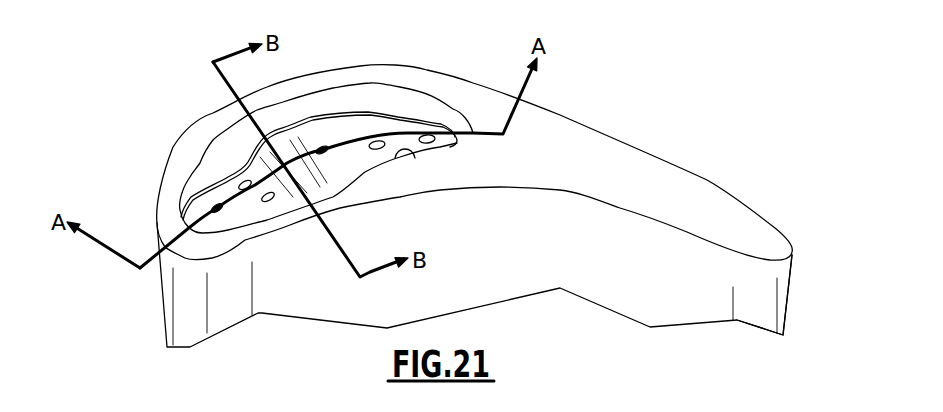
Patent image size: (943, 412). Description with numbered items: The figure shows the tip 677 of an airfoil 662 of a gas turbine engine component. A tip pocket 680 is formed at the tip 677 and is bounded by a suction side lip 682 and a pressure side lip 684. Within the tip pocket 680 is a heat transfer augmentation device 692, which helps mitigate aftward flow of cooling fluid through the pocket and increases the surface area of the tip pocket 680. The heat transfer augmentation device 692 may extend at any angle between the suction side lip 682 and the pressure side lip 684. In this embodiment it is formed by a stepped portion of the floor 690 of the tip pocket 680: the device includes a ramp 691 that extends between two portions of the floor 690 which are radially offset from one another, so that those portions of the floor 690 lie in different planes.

The airfoil 662 is at (747, 294).
The tip 677 is at (590, 109).
The tip pocket 680 is at (230, 158).
The suction side lip 682 is at (357, 100).
The pressure side lip 684 is at (417, 152).
The floor 690 is at (233, 223).
The ramp 691 is at (320, 178).
The heat transfer augmentation device 692 is at (288, 122).